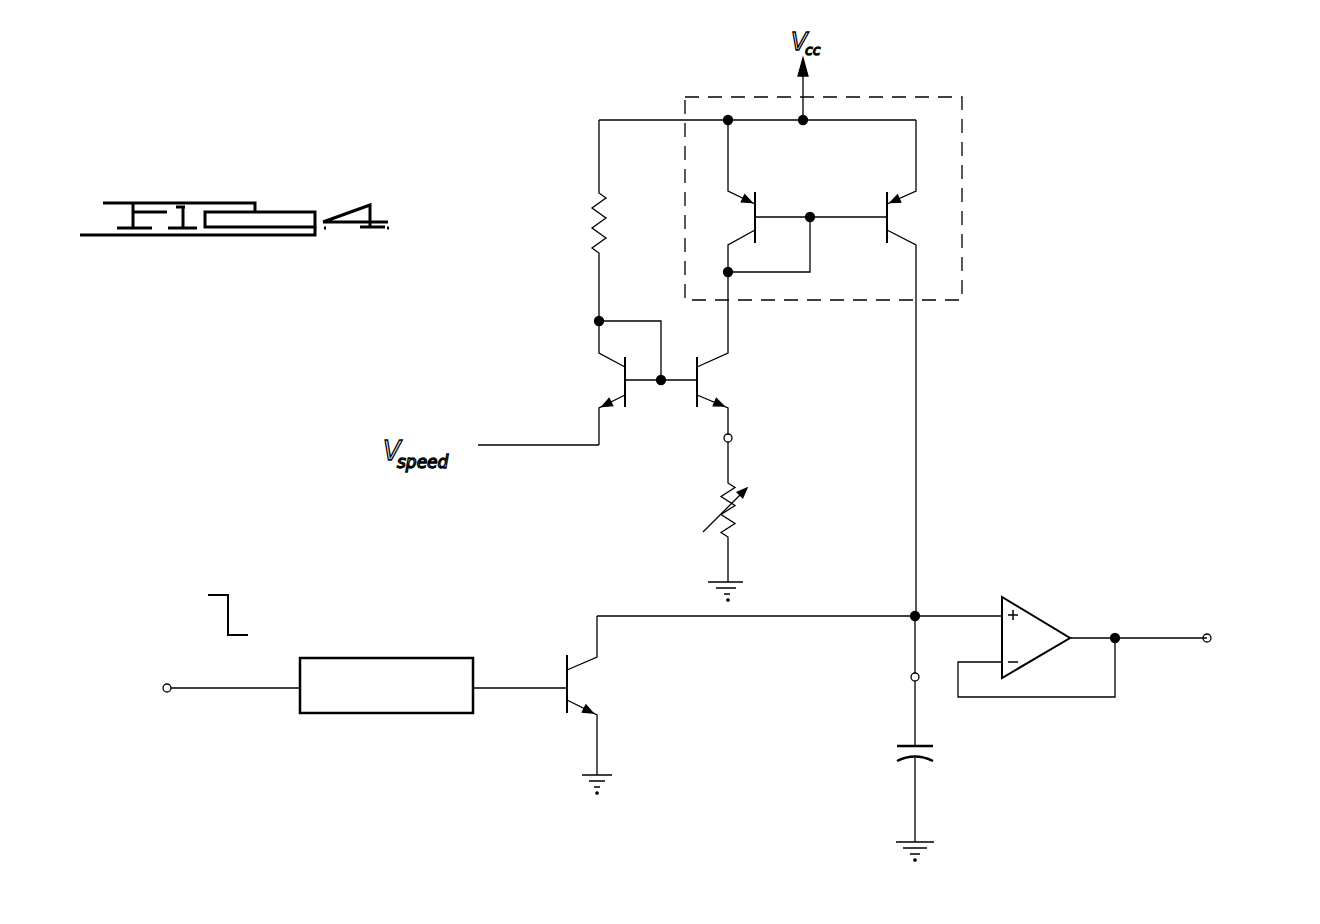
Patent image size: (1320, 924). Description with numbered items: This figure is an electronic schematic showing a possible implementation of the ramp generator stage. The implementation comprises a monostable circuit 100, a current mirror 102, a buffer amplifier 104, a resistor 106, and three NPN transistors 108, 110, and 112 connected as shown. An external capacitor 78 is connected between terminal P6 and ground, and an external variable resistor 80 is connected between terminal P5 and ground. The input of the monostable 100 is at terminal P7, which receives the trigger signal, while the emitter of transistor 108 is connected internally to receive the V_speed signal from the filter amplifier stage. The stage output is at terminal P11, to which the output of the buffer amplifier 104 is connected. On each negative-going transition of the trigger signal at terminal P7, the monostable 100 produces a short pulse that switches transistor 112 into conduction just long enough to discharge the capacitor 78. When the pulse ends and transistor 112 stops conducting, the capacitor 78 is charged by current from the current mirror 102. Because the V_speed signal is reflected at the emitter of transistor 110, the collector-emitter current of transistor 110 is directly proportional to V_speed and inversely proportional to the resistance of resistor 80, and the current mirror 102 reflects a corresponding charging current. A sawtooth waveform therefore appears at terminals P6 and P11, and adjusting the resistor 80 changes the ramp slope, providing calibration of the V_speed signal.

The current mirror 102 is at (962, 178).
The resistor 106 is at (596, 213).
The transistor 108 is at (610, 380).
The transistor 110 is at (712, 382).
The terminal P5 is at (735, 438).
The variable resistor 80 is at (730, 513).
The monostable circuit 100 is at (352, 658).
The transistor 112 is at (580, 681).
The terminal P7 is at (165, 693).
The buffer amplifier 104 is at (1027, 610).
The terminal P11 is at (1210, 636).
The terminal P6 is at (909, 677).
The capacitor 78 is at (897, 757).